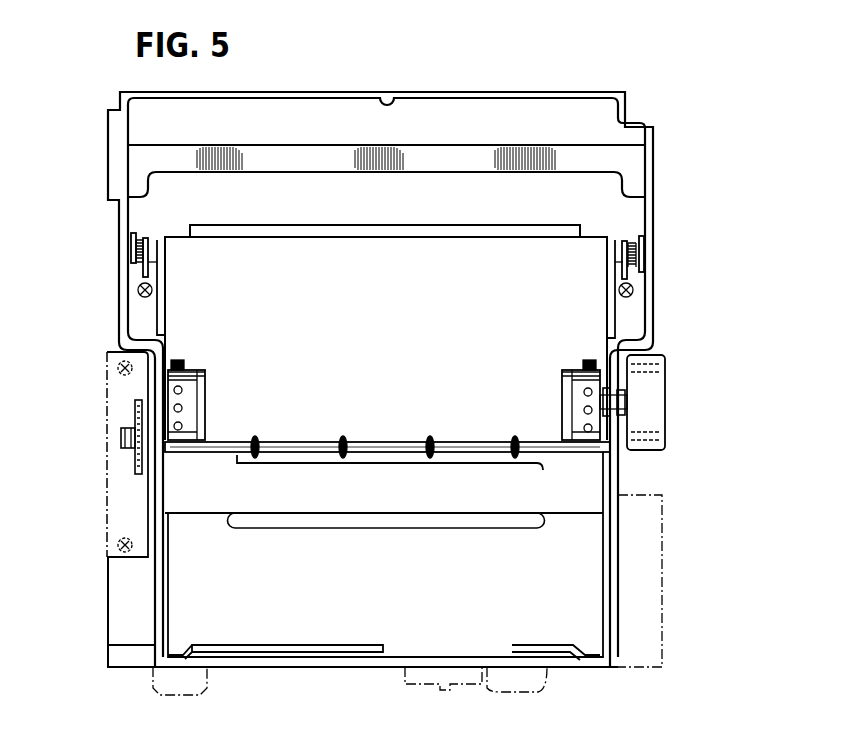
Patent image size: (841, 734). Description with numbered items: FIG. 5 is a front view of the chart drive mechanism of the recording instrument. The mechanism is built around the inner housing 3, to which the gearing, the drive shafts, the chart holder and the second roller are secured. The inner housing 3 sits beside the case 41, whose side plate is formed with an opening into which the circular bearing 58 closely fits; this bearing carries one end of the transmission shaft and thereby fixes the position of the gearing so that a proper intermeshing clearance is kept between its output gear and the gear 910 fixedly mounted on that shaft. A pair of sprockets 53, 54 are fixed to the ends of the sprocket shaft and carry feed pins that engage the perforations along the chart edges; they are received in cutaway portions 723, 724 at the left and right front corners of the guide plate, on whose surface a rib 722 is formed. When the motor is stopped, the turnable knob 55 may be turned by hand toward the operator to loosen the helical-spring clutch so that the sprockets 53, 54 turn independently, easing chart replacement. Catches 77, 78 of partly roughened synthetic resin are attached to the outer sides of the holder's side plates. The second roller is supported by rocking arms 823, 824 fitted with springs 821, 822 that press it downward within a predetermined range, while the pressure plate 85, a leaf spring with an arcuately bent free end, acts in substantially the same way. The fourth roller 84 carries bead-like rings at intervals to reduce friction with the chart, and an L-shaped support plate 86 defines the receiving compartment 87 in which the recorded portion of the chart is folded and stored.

The inner housing 3 is at (478, 92).
The spring 821 is at (136, 234).
The rocking arm 823 is at (146, 238).
The spring 822 is at (639, 238).
The rocking arm 824 is at (625, 241).
The pressure plate 85 is at (247, 226).
The catch 77 is at (158, 306).
The catch 78 is at (615, 322).
The sprocket 53 is at (192, 370).
The cutaway portion 723 is at (205, 373).
The sprocket 54 is at (572, 370).
The cutaway portion 724 is at (562, 372).
The circular bearing 58 is at (137, 398).
The gear g10 910 is at (135, 456).
The case 41 is at (106, 479).
The fourth roller 84 is at (304, 442).
The rib 722 is at (383, 464).
The turnable knob 55 is at (667, 430).
The receiving compartment 87 is at (352, 612).
The L-shaped support plate 86 is at (530, 645).